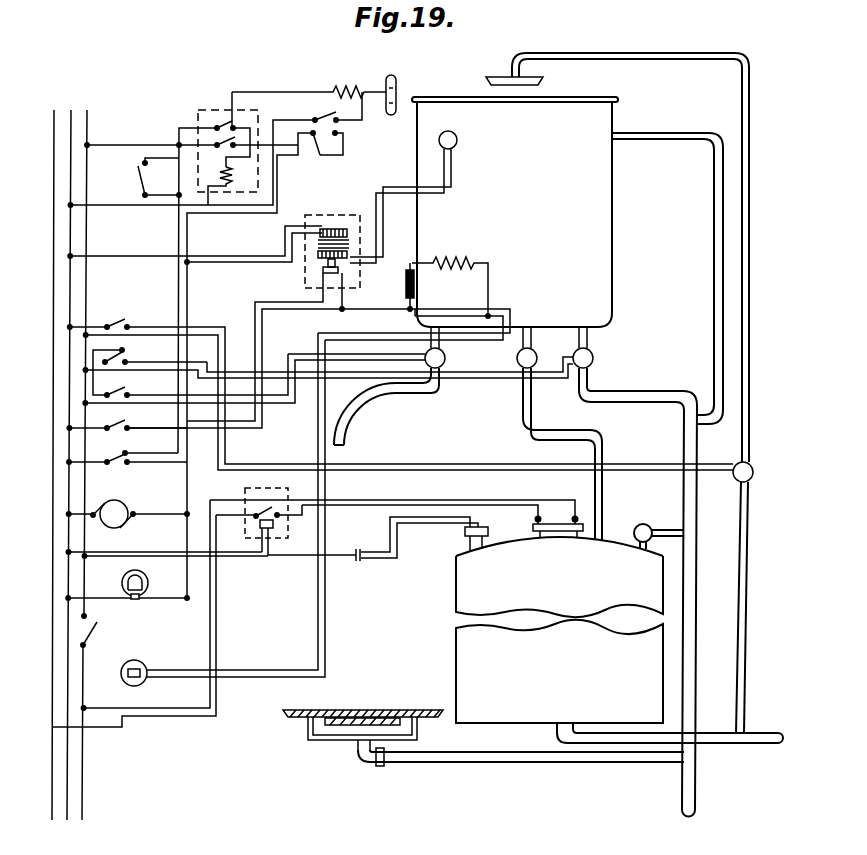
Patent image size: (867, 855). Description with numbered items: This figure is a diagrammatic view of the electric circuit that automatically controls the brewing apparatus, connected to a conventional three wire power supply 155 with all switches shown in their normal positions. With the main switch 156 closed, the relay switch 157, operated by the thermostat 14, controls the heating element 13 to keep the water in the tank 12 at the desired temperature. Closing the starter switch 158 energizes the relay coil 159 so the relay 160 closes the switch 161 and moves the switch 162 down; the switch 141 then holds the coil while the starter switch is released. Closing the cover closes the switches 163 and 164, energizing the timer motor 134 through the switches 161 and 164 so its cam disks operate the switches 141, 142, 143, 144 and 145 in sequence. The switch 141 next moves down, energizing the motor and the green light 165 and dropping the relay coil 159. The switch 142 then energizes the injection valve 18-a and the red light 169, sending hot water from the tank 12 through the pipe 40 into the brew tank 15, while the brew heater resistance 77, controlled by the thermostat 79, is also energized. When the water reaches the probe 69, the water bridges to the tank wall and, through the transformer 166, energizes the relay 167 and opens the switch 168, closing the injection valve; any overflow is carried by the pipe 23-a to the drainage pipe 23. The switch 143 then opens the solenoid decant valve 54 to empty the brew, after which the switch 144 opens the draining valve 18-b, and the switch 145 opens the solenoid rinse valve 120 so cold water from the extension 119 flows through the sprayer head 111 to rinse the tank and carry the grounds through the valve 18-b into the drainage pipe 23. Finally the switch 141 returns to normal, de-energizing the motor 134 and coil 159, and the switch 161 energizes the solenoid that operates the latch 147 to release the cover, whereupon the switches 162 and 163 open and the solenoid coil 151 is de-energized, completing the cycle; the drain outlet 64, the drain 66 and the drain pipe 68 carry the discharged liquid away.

The three wire power supply 155 is at (99, 802).
The solenoid coil 151 is at (348, 88).
The latch 147 is at (398, 80).
The relay 160 is at (198, 117).
The switch 162 is at (216, 122).
The switch 161 is at (212, 144).
The relay coil 159 is at (230, 186).
The starter switch 158 is at (137, 167).
The switch 163 is at (314, 117).
The switch 164 is at (315, 148).
The transformer 166 is at (330, 228).
The relay 167 is at (305, 281).
The switch 168 is at (360, 282).
The probe 69 is at (458, 141).
The brew tank 15 is at (612, 198).
The sprayer head 111 is at (553, 85).
The extension 119 is at (746, 411).
The solenoid rinse valve 120 is at (753, 480).
The overflow pipe 23-a is at (714, 256).
The electrical resistance 77 is at (460, 259).
The thermostat 79 is at (420, 289).
The solenoid decant valve 54 is at (446, 360).
The drain pipe 64 is at (351, 422).
The injection valve 18-a is at (537, 352).
The pipe 40 is at (604, 458).
The draining valve 18-b is at (594, 356).
The drainage pipe 23 is at (694, 637).
The heating element 13 is at (570, 534).
The tank 12 is at (457, 663).
The thermostat 14 is at (464, 536).
The relay switch 157 is at (275, 503).
The switch 145 is at (132, 323).
The switch 144 is at (130, 358).
The switch 143 is at (132, 391).
The switch 142 is at (132, 423).
The switch 141 is at (127, 466).
The timer motor 134 is at (131, 508).
The green light 165 is at (154, 583).
The main switch 156 is at (98, 637).
The red light 169 is at (143, 665).
The drain 66 is at (300, 723).
The drain pipe 68 is at (476, 763).